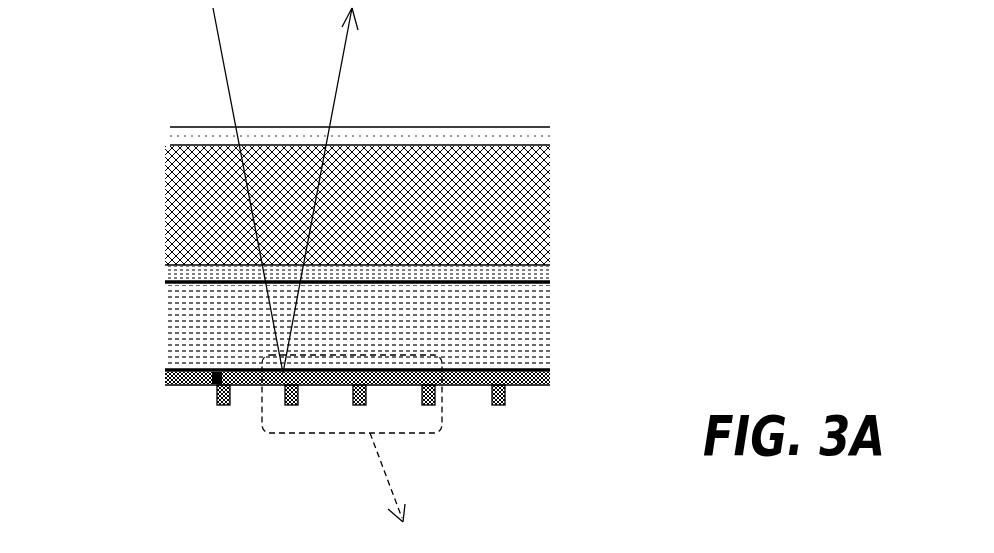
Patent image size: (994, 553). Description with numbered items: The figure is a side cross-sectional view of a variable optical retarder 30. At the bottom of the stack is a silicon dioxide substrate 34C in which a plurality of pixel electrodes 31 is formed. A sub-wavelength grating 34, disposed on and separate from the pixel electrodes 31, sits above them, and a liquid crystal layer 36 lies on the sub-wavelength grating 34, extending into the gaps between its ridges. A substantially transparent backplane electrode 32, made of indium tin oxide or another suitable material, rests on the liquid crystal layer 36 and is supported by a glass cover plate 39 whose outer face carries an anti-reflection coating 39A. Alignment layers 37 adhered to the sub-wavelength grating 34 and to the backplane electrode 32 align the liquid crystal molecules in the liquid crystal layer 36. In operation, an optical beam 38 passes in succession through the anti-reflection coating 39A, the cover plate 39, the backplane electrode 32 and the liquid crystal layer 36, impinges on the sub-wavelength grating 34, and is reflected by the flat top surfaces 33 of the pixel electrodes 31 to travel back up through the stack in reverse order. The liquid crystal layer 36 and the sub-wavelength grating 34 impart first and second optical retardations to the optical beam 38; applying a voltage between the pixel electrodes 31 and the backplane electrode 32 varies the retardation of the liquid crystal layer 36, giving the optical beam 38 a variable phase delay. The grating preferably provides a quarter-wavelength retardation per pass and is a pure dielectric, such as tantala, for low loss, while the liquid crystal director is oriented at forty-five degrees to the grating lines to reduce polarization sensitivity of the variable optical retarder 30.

The variable optical retarder 30 is at (115, 94).
The pixel electrodes 31 is at (428, 405).
The backplane electrode 32 is at (530, 271).
The top surfaces 33 is at (218, 385).
The sub-wavelength grating 34 is at (545, 375).
The substrate 34C is at (200, 410).
The liquid crystal layer 36 is at (535, 338).
The alignment layers 37 is at (165, 281).
The optical beam 38 is at (222, 53).
The cover plate 39 is at (527, 181).
The anti-reflection coating 39A is at (445, 113).